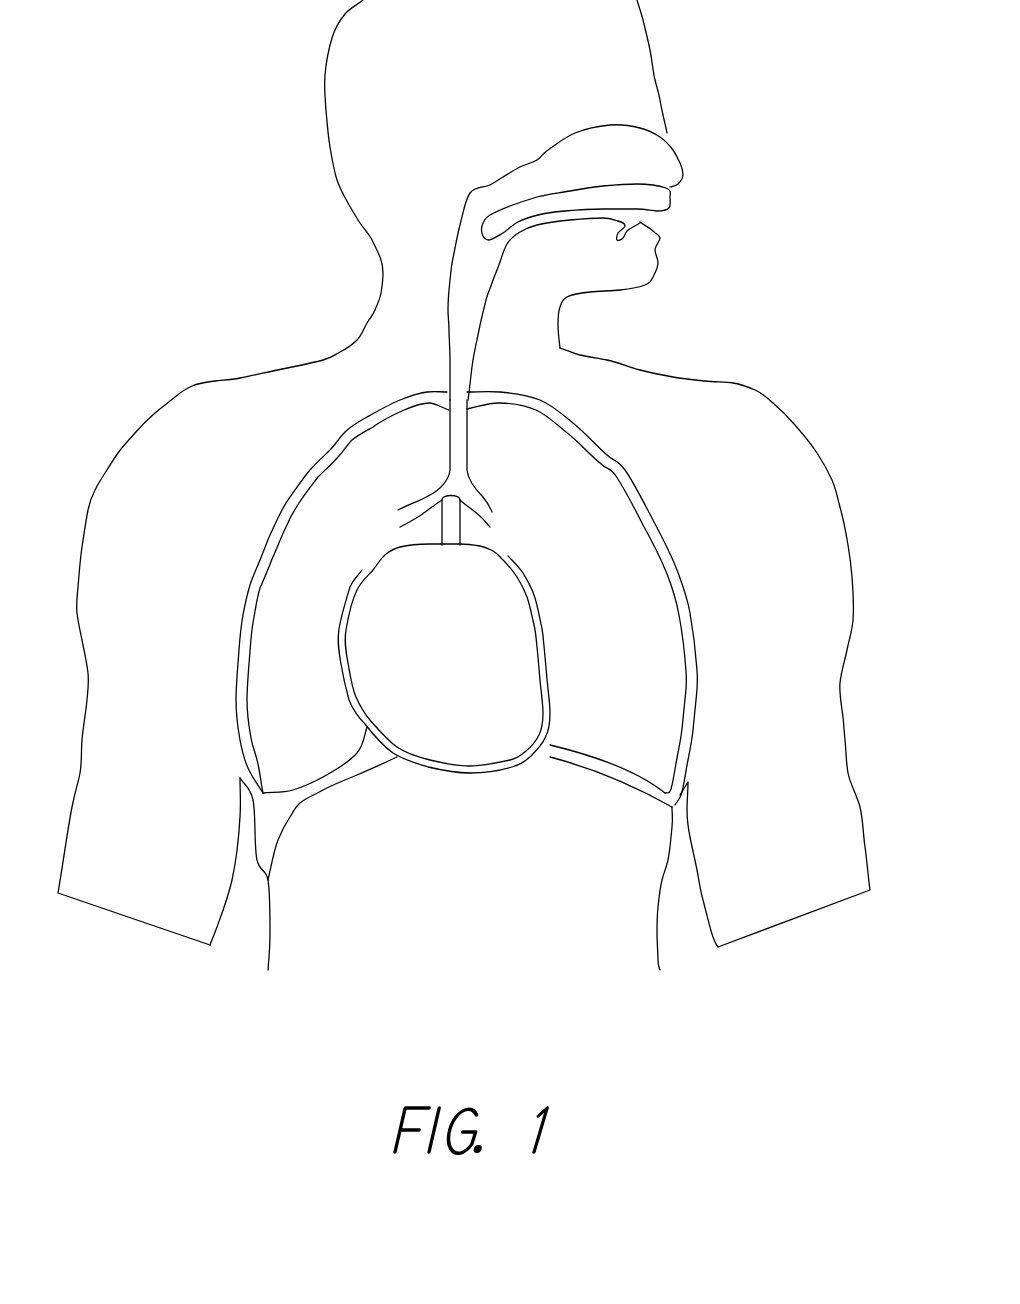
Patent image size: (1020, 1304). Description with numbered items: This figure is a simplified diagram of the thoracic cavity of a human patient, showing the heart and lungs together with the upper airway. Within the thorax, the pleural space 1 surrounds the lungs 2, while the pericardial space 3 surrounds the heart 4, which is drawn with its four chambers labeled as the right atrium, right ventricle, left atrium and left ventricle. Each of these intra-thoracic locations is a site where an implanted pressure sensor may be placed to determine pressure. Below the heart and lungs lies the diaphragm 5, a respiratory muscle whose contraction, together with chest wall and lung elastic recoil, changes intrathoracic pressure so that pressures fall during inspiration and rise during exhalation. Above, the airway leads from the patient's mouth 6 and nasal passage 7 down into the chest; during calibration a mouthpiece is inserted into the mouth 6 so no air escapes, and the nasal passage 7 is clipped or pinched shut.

The pleural space 1 is at (310, 462).
The lungs 2 is at (617, 538).
The pericardial space 3 is at (550, 725).
The heart 4 is at (480, 570).
The diaphragm 5 is at (290, 817).
The mouth 6 is at (640, 220).
The nasal passage 7 is at (647, 155).